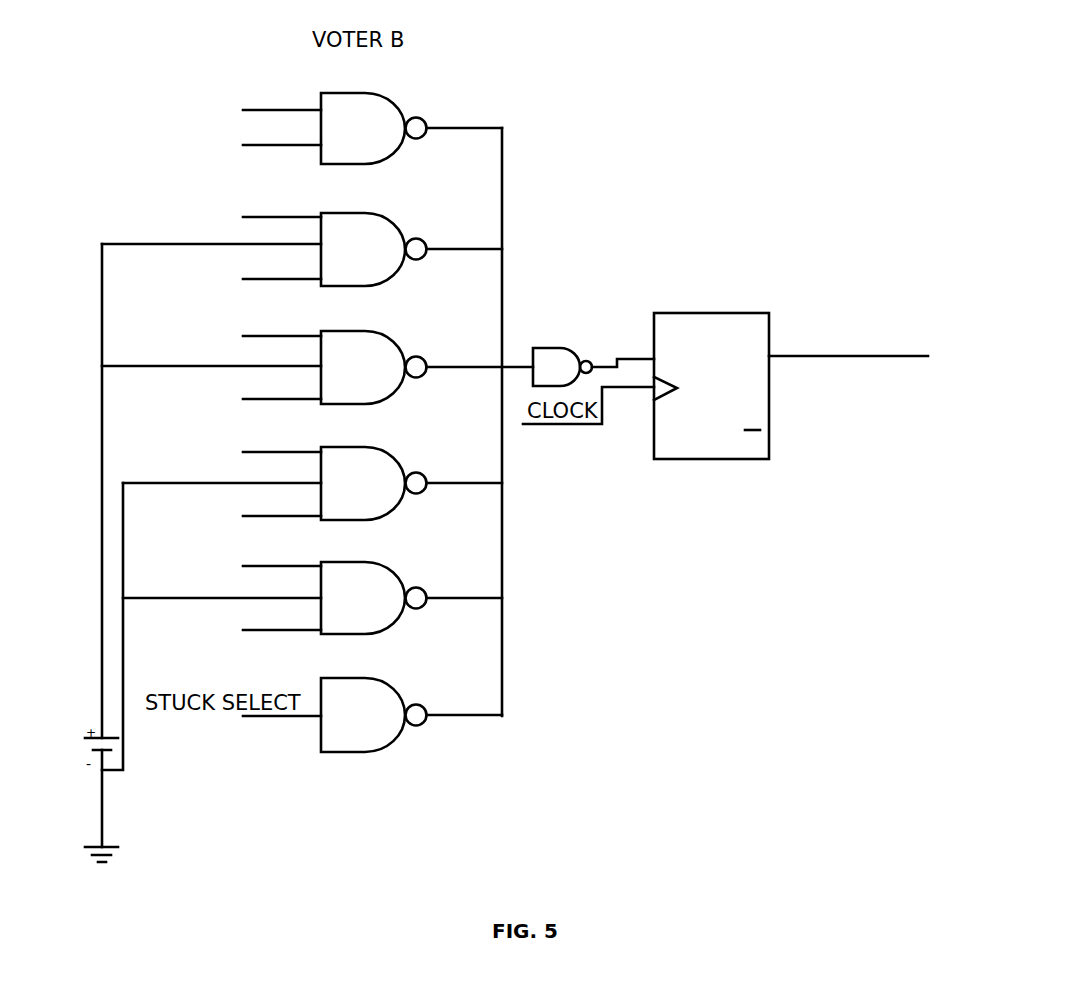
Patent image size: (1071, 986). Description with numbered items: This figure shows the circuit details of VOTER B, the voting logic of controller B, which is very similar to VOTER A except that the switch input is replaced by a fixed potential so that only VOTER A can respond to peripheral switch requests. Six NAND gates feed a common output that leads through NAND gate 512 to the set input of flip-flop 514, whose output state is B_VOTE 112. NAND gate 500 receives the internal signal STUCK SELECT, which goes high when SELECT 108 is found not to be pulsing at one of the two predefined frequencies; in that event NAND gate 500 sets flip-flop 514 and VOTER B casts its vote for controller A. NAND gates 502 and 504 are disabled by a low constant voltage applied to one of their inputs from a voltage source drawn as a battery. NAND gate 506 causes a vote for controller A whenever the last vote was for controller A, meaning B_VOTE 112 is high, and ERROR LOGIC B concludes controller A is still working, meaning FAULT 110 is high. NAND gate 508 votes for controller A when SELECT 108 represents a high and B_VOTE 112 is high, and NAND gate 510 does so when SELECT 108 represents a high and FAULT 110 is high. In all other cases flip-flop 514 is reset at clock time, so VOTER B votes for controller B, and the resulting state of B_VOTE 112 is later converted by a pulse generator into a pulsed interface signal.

The NAND gate 500 is at (372, 715).
The NAND gate 502 is at (312, 598).
The NAND gate 504 is at (312, 483).
The NAND gate 506 is at (317, 367).
The NAND gate 508 is at (302, 249).
The NAND gate 510 is at (372, 128).
The NAND gate 512 is at (593, 367).
The flip-flop 514 is at (711, 386).
The SELECT 108 is at (245, 317).
The FAULT 110 is at (253, 357).
The B_VOTE 112 is at (553, 374).